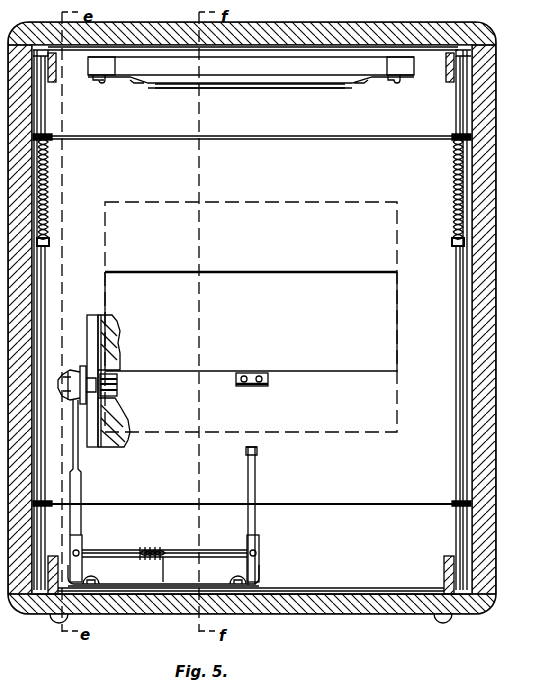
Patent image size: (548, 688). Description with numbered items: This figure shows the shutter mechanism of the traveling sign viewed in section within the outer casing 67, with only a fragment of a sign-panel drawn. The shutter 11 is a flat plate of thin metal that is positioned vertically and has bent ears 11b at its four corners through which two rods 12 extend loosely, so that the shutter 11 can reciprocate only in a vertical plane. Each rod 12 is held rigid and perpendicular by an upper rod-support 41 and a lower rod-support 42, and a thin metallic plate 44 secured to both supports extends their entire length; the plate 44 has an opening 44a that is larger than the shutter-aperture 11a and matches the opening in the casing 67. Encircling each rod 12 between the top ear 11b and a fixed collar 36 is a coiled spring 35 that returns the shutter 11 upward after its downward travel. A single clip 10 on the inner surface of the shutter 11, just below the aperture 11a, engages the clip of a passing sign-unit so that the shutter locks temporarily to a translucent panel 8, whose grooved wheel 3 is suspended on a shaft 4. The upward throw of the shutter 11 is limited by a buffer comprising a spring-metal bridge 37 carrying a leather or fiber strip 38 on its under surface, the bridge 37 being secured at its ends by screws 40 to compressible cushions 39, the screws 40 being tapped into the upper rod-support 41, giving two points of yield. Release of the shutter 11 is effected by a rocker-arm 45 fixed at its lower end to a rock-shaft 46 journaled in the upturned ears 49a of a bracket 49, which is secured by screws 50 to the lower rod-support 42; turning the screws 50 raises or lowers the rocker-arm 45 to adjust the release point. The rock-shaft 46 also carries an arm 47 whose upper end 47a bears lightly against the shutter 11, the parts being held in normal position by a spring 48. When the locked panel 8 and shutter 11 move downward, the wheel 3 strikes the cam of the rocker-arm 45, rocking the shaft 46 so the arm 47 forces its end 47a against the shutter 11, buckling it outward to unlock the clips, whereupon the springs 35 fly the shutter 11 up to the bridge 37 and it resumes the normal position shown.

The circumferentially-grooved wheel 3 is at (74, 371).
The shaft 4 is at (120, 385).
The translucent panel 8 is at (123, 336).
The clip 10 is at (270, 381).
The shutter 11 is at (252, 521).
The shutter-aperture 11a is at (251, 321).
The bent ear 11b is at (49, 137).
The rod 12 is at (50, 291).
The coiled spring 35 is at (50, 190).
The fixed collar 36 is at (50, 241).
The bridge 37 is at (306, 85).
The leather or fiber strip 38 is at (240, 86).
The cushion 39 is at (106, 60).
The screw 40 is at (104, 82).
The upper rod-support 41 is at (270, 50).
The lower rod-support 42 is at (356, 592).
The plate 44 is at (418, 578).
The plate opening 44a is at (298, 204).
The rocker-arm 45 is at (82, 520).
The rock-shaft 46 is at (219, 551).
The arm 47 is at (257, 522).
The upper end of arm 47a is at (258, 450).
The spring 48 is at (171, 540).
The bracket 49 is at (133, 587).
The upturned ear 49a is at (260, 574).
The screw 50 is at (90, 590).
The outer casing 67 is at (484, 301).